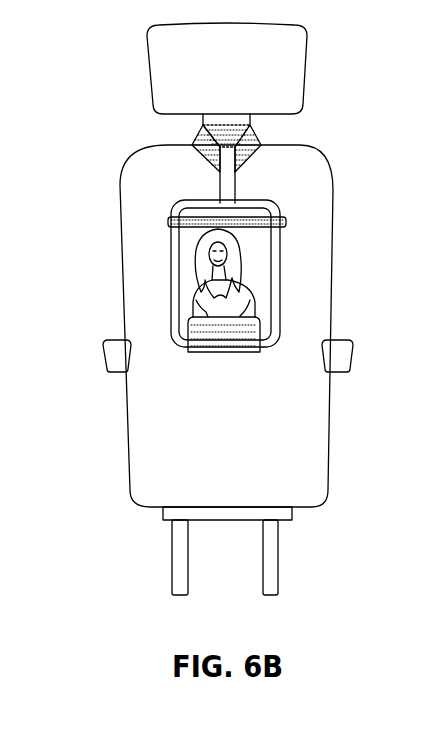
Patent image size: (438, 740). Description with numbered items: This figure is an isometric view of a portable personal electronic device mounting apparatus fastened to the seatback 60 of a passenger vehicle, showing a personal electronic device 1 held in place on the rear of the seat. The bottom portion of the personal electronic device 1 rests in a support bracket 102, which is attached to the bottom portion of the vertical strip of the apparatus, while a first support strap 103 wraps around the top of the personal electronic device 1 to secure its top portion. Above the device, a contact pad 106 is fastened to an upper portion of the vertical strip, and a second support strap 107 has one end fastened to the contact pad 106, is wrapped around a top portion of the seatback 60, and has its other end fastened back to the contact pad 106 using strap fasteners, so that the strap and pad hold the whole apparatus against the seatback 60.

The personal electronic device 1 is at (258, 306).
The seatback 60 is at (313, 194).
The support bracket 102 is at (246, 340).
The first support strap 103 is at (246, 222).
The contact pad 106 is at (218, 197).
The second support strap 107 is at (241, 152).